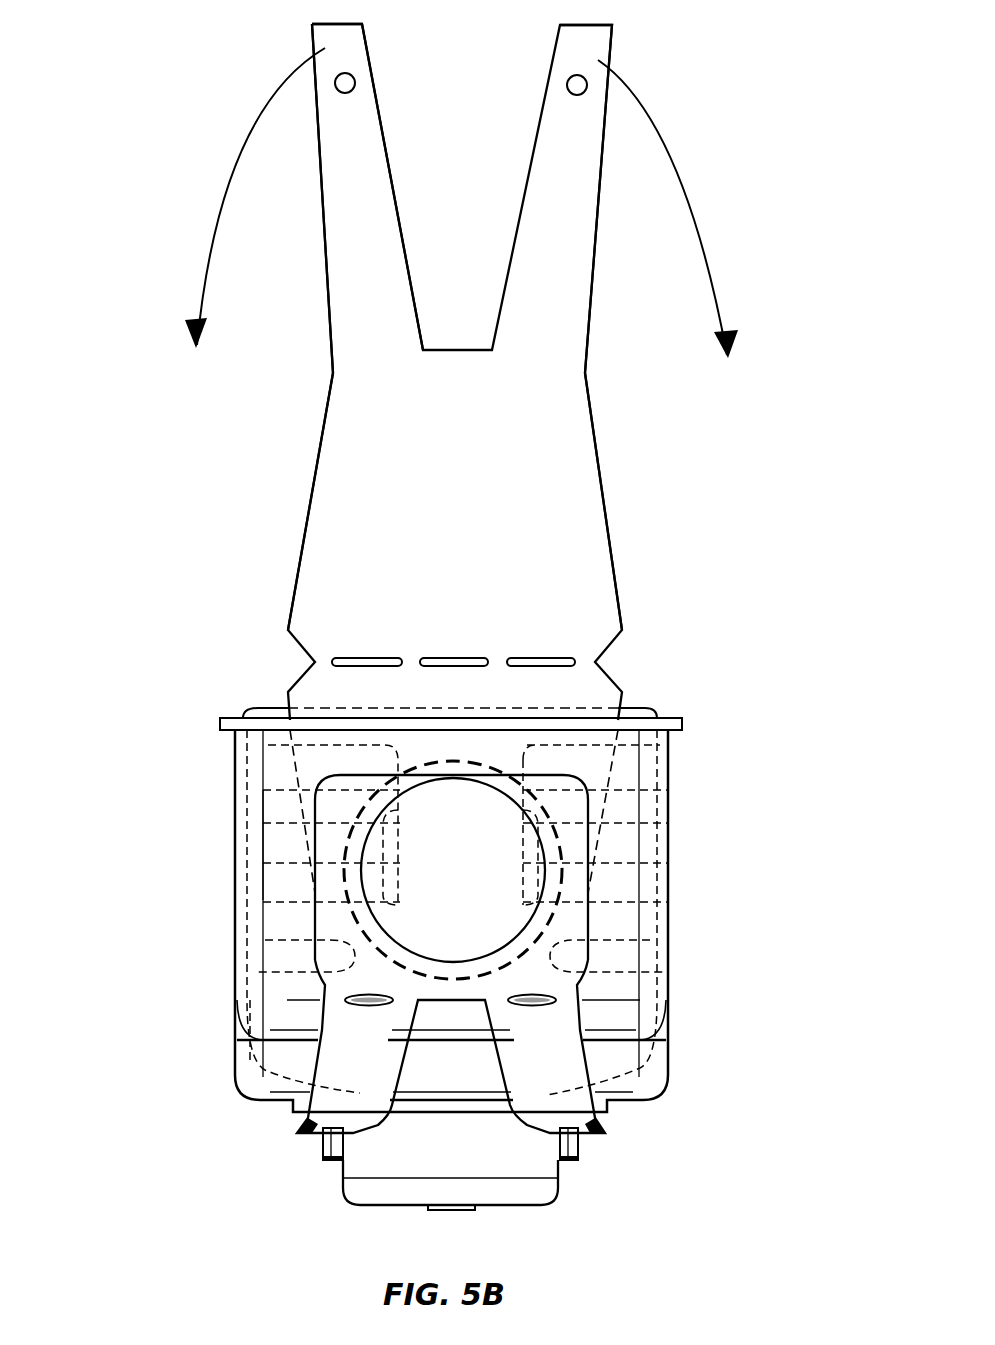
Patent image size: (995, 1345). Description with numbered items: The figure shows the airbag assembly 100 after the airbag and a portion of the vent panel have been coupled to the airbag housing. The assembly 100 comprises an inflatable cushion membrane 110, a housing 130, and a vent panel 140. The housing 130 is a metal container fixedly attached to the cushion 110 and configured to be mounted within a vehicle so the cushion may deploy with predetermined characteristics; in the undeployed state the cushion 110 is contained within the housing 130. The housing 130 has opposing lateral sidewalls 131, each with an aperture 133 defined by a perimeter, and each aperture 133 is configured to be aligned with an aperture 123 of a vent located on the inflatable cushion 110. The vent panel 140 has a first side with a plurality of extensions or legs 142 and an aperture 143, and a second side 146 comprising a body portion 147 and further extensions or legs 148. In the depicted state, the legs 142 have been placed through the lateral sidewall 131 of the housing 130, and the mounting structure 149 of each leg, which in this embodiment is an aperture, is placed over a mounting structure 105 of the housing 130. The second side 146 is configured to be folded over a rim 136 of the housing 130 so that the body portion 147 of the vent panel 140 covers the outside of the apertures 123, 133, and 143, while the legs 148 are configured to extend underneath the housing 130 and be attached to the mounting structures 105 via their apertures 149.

The airbag assembly 100 is at (92, 86).
The mounting structures 105 is at (333, 1145).
The inflatable cushion membrane 110 is at (245, 811).
The aperture 123 is at (487, 903).
The housing 130 is at (192, 856).
The lateral sidewall 131 is at (305, 852).
The aperture 133 is at (453, 870).
The rim 136 is at (670, 723).
The vent panel 140 is at (358, 389).
The extensions 142 is at (330, 1100).
The aperture 143 is at (451, 890).
The second side 146 is at (573, 528).
The body portion 147 is at (343, 488).
The extensions 148 is at (353, 180).
The mounting structure 149 is at (348, 83).